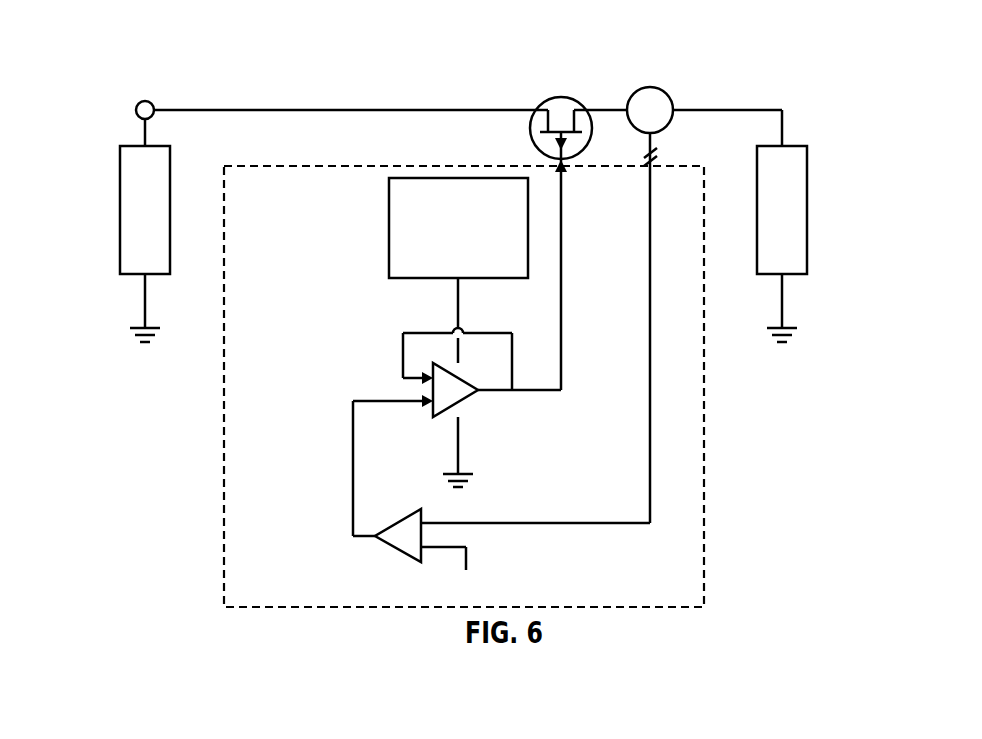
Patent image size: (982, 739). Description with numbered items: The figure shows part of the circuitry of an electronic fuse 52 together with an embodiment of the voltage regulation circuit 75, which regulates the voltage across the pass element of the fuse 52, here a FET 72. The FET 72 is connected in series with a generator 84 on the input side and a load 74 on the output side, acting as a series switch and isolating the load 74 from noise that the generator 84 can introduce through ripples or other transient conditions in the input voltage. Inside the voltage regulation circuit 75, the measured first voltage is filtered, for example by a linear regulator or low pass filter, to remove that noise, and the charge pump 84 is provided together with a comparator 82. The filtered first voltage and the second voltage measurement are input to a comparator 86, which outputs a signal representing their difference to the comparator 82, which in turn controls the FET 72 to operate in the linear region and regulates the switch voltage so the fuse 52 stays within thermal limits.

The fuse 52 is at (309, 55).
The FET 72 is at (542, 103).
The load 74 is at (807, 210).
The generator 84 is at (119, 210).
The comparator 82 is at (470, 394).
The comparator 86 is at (406, 525).
The voltage regulation circuit 75 is at (705, 481).